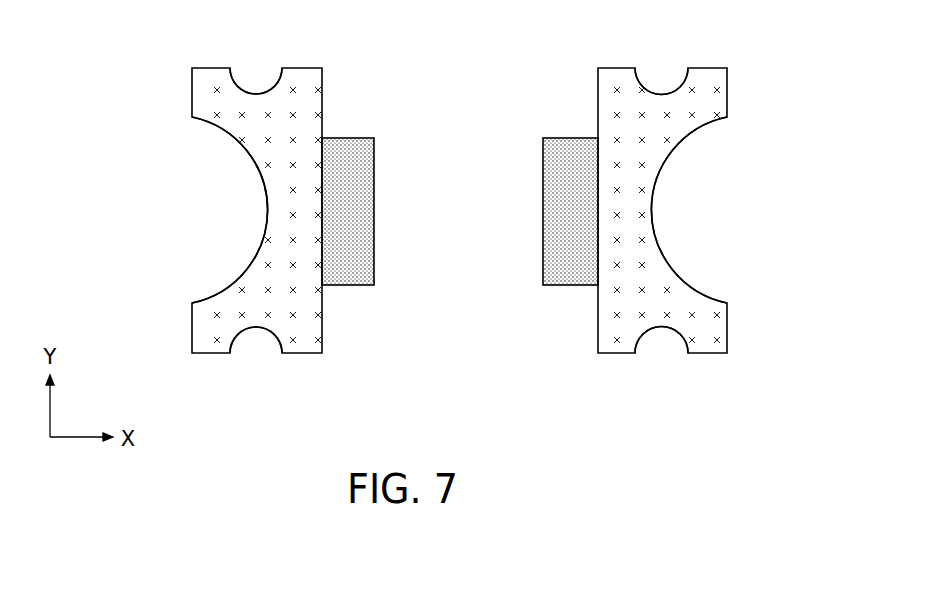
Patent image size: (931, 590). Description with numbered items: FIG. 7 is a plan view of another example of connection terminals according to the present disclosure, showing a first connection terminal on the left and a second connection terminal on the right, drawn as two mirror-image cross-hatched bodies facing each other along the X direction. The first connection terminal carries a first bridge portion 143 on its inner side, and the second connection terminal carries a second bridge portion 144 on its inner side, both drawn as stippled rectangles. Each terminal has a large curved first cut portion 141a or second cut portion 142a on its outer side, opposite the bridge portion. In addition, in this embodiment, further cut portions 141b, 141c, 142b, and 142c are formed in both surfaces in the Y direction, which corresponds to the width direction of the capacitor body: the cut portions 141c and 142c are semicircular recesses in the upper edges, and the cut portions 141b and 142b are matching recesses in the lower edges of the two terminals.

The first cut portion 141a is at (267, 211).
The cut portion 141b is at (256, 330).
The cut portion 141c is at (257, 90).
The first bridge portion 143 is at (347, 287).
The second cut portion 142a is at (655, 212).
The cut portion 142b is at (662, 330).
The cut portion 142c is at (661, 90).
The second bridge portion 144 is at (572, 287).